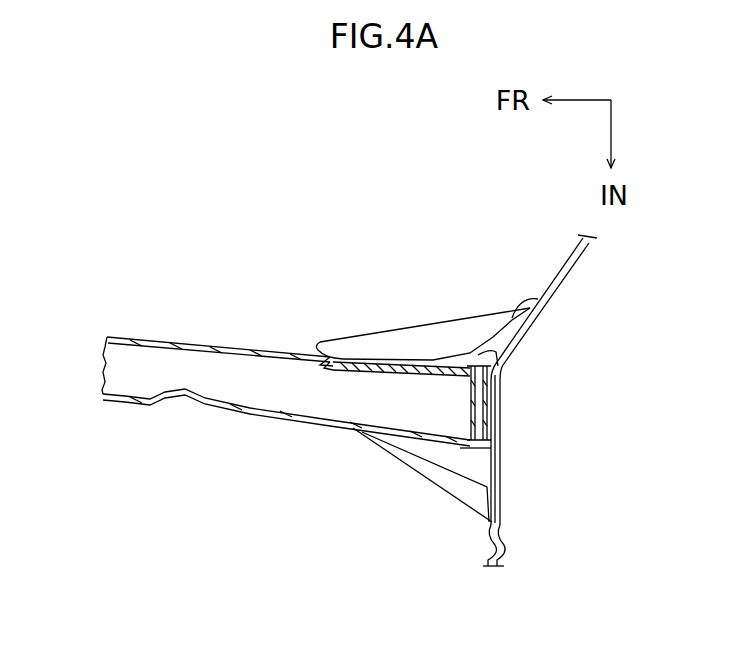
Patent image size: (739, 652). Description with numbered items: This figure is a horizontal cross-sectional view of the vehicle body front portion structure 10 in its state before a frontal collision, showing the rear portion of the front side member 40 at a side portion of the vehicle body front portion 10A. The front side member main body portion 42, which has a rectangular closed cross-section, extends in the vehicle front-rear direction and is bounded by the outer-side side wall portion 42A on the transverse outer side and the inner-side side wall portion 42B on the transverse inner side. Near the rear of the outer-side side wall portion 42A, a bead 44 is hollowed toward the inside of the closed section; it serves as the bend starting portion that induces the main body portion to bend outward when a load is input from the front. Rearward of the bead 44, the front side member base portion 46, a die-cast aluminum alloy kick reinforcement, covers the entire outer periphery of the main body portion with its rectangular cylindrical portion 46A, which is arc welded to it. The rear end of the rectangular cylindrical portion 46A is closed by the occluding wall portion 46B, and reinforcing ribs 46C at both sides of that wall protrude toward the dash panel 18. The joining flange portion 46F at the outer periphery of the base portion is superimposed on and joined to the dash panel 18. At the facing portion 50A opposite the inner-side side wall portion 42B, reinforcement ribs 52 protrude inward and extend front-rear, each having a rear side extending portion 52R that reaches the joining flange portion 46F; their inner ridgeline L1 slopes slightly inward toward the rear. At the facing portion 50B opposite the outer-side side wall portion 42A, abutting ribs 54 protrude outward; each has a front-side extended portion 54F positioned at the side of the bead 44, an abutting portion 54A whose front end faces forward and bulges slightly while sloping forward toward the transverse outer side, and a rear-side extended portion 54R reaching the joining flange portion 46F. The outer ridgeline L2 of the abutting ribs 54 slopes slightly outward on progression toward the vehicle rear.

The vehicle body front portion structure 10 is at (339, 178).
The vehicle body front portion 10A is at (290, 197).
The front side member 40 is at (234, 224).
The front side member main body portion 42 is at (155, 323).
The outer-side side wall portion 42A is at (247, 342).
The inner-side side wall portion 42B is at (247, 414).
The bead 44 is at (315, 352).
The front side member base portion 46 is at (480, 297).
The rectangular cylindrical portion 46A is at (417, 352).
The occluding wall portion 46B is at (498, 408).
The reinforcing ribs 46C is at (503, 393).
The joining flange portion 46F is at (540, 300).
The facing portion 50A is at (388, 425).
The facing portion 50B is at (397, 376).
The reinforcement rib 52 is at (428, 484).
The rear side extending portion 52R is at (487, 517).
The abutting rib 54 is at (412, 320).
The abutting portion 54A is at (320, 354).
The front-side extended portion 54F is at (325, 352).
The rear-side extended portion 54R is at (512, 305).
The dash panel 18 is at (559, 272).
The ridgeline L1 is at (410, 458).
The ridgeline L2 is at (385, 331).